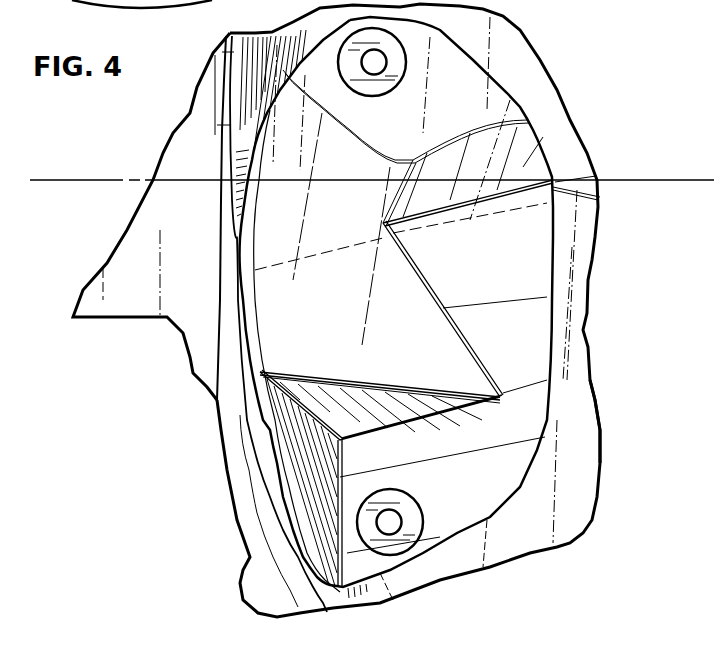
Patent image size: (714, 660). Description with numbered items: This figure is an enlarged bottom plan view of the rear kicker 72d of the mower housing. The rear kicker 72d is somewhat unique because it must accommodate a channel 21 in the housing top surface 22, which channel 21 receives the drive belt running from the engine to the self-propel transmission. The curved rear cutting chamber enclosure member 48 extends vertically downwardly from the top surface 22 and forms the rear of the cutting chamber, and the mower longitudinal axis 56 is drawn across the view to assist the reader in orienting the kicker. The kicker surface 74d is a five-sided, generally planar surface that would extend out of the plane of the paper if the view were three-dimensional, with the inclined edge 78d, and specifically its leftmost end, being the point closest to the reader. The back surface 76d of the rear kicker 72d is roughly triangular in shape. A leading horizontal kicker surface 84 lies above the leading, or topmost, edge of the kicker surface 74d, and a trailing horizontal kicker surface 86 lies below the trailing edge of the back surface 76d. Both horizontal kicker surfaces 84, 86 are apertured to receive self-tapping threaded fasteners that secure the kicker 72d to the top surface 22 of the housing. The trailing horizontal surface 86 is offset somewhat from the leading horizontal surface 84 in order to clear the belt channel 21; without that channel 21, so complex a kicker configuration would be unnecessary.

The channel 21 is at (583, 427).
The top surface 22 is at (530, 70).
The rear cutting chamber enclosure member 48 is at (250, 440).
The mower longitudinal axis 56 is at (96, 178).
The rear kicker 72d is at (590, 343).
The kicker surface 74d is at (348, 300).
The back surface 76d is at (407, 407).
The inclined edge 78d is at (337, 378).
The leading horizontal kicker surface 84 is at (470, 100).
The trailing horizontal kicker surface 86 is at (477, 494).